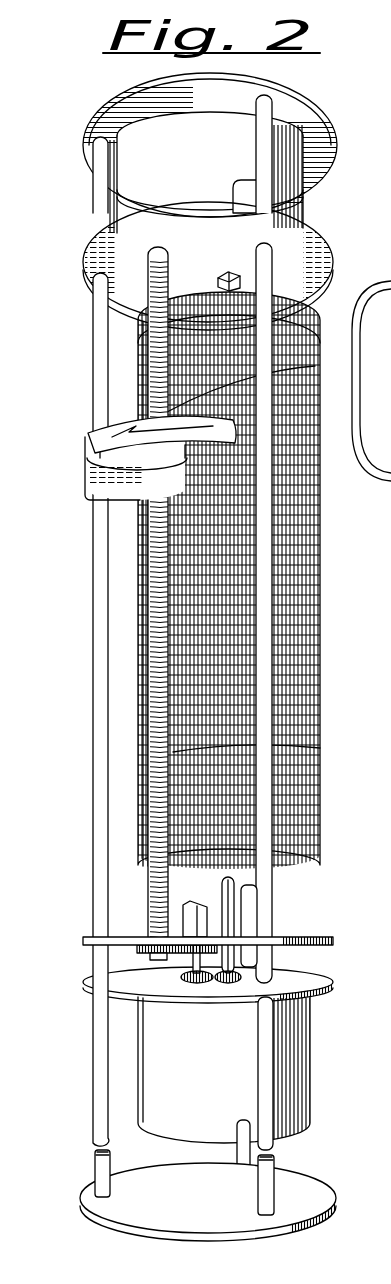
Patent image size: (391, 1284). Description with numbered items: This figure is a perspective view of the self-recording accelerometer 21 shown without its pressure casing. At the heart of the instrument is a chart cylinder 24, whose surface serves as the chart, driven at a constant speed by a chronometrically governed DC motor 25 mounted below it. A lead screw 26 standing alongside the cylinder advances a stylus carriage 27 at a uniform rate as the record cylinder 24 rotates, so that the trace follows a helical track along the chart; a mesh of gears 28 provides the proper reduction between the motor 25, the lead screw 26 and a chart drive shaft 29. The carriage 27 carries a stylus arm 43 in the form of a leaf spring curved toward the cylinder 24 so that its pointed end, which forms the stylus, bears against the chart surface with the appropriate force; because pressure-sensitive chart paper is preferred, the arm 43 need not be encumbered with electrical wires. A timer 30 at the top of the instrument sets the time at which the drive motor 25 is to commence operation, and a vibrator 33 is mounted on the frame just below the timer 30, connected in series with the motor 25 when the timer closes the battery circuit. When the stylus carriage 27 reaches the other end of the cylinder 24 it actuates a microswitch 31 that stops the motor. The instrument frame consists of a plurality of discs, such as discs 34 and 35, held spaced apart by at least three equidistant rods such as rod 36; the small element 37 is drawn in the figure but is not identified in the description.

The self-recording accelerometer 21 is at (197, 657).
The chart cylinder 24 is at (312, 700).
The DC motor 25 is at (231, 1086).
The lead screw 26 is at (158, 546).
The stylus carriage 27 is at (86, 477).
The mesh of gears 28 is at (124, 962).
The chart drive shaft 29 is at (235, 905).
The timer 30 is at (212, 170).
The microswitch 31 is at (183, 917).
The vibrator 33 is at (256, 199).
The disc 34 is at (84, 280).
The disc 35 is at (83, 938).
The rod 36 is at (95, 335).
The contact 37 is at (226, 275).
The stylus arm 43 is at (112, 441).